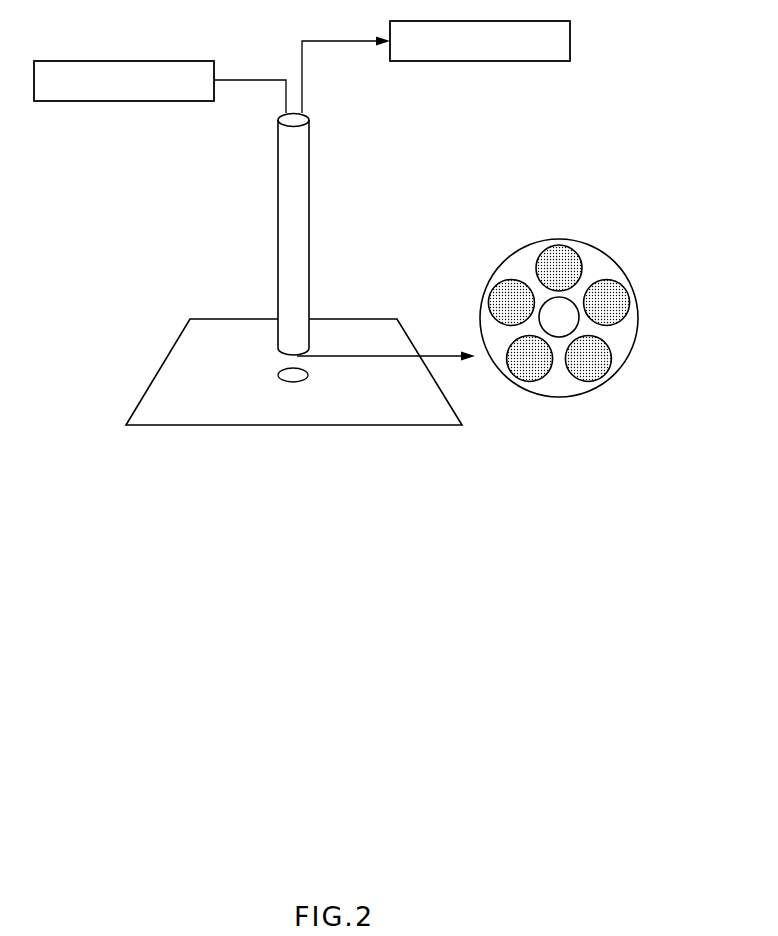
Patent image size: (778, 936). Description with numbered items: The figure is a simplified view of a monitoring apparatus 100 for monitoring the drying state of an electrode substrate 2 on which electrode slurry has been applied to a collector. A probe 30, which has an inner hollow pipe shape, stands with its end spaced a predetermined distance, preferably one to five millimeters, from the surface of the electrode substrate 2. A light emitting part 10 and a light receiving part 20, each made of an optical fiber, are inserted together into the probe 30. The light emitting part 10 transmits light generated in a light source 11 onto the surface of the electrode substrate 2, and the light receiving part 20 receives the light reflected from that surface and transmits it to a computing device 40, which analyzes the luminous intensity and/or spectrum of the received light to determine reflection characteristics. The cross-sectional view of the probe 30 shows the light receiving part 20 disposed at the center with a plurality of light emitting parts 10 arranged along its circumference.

The electrode substrate 2 is at (355, 343).
The light emitting part 10 is at (558, 250).
The light source 11 is at (160, 87).
The light receiving part 20 is at (560, 317).
The probe 30 is at (288, 192).
The computing device 40 is at (436, 67).
The apparatus 100 is at (374, 167).